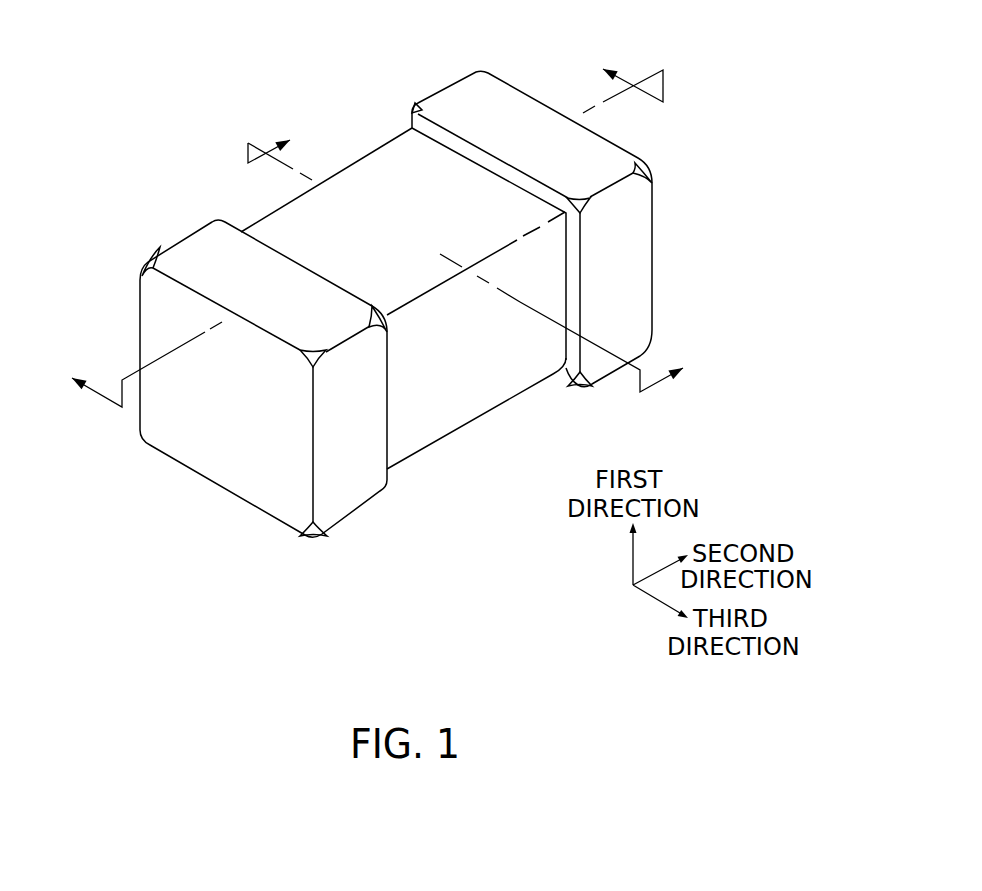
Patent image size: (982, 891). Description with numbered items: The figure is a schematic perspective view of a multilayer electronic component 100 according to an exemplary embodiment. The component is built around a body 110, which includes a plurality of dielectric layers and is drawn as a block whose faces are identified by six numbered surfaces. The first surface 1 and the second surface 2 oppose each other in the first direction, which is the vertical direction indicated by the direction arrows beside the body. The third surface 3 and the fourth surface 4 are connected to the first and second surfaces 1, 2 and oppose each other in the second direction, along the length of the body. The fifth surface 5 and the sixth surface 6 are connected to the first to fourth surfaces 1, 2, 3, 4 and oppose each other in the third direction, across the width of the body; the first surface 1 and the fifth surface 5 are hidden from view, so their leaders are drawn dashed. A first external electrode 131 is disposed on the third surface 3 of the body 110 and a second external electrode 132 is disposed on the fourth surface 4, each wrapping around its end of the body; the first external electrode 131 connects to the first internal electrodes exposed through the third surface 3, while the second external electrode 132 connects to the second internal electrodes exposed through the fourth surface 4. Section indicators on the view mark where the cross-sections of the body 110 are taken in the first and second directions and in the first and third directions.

The multilayer electronic component 100 is at (177, 40).
The body 110 is at (275, 237).
The first external electrode 131 is at (198, 254).
The second external electrode 132 is at (455, 110).
The first surface 1 is at (437, 392).
The second surface 2 is at (411, 186).
The third surface 3 is at (230, 440).
The fourth surface 4 is at (601, 247).
The fifth surface 5 is at (357, 207).
The sixth surface 6 is at (494, 362).